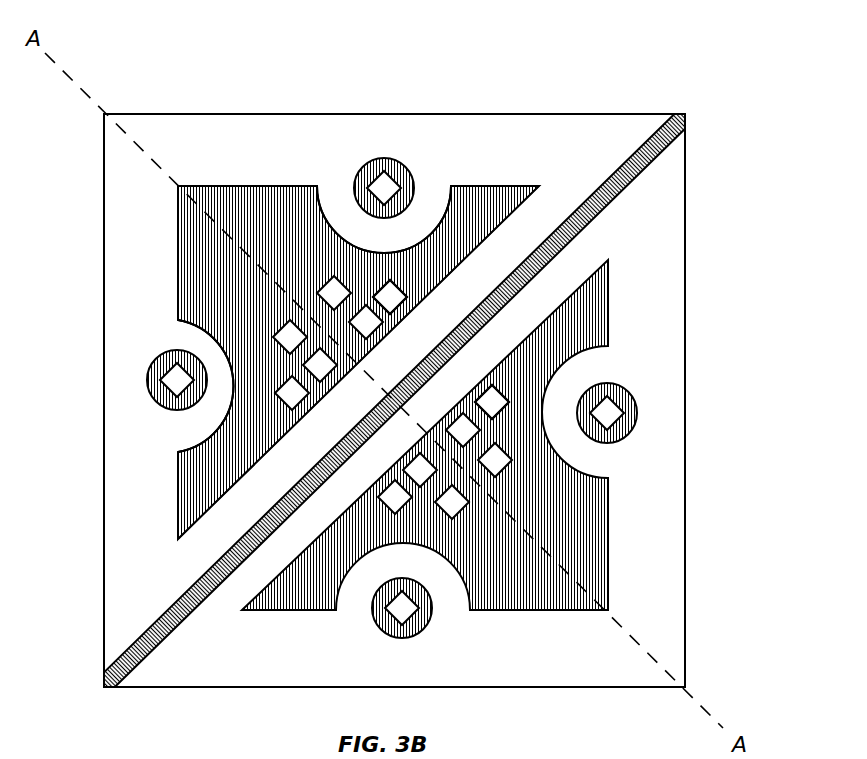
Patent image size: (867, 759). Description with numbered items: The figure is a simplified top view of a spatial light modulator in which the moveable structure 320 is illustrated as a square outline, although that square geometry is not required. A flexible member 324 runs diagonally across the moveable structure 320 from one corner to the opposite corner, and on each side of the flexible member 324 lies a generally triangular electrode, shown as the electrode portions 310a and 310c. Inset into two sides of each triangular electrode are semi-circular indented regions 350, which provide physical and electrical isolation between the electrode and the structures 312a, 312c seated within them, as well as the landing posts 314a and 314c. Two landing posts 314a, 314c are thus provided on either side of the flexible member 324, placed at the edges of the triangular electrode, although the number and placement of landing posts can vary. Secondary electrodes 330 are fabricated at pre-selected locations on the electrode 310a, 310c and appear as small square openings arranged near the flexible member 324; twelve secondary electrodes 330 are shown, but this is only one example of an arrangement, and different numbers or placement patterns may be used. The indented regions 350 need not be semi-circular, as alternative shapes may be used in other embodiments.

The electrode 310a is at (203, 243).
The electrode 310c is at (198, 488).
The structure 312a is at (160, 363).
The structure 312c is at (367, 170).
The landing post 314a is at (178, 380).
The landing post 314c is at (402, 173).
The moveable structure 320 is at (688, 352).
The flexible member 324 is at (672, 142).
The secondary electrodes 330 is at (390, 297).
The semi-circular indented regions 350 is at (348, 210).